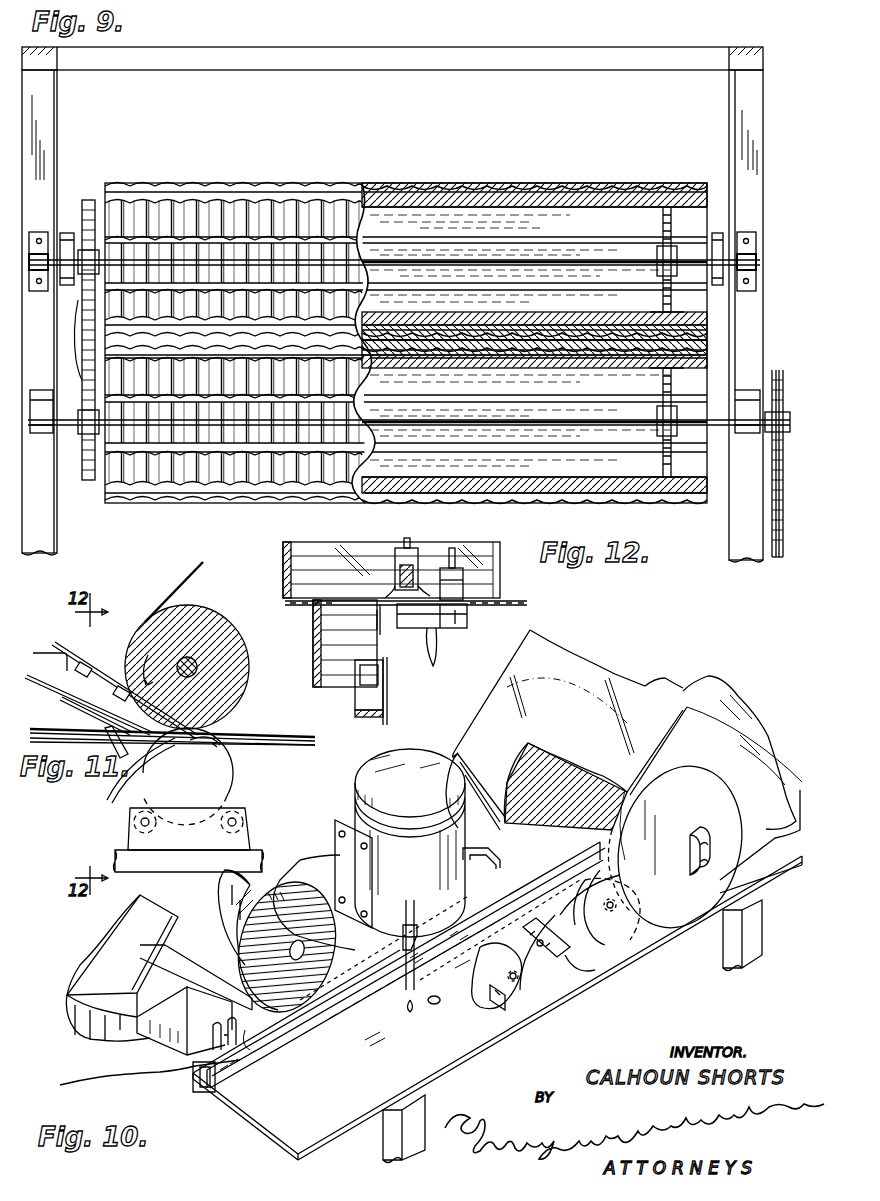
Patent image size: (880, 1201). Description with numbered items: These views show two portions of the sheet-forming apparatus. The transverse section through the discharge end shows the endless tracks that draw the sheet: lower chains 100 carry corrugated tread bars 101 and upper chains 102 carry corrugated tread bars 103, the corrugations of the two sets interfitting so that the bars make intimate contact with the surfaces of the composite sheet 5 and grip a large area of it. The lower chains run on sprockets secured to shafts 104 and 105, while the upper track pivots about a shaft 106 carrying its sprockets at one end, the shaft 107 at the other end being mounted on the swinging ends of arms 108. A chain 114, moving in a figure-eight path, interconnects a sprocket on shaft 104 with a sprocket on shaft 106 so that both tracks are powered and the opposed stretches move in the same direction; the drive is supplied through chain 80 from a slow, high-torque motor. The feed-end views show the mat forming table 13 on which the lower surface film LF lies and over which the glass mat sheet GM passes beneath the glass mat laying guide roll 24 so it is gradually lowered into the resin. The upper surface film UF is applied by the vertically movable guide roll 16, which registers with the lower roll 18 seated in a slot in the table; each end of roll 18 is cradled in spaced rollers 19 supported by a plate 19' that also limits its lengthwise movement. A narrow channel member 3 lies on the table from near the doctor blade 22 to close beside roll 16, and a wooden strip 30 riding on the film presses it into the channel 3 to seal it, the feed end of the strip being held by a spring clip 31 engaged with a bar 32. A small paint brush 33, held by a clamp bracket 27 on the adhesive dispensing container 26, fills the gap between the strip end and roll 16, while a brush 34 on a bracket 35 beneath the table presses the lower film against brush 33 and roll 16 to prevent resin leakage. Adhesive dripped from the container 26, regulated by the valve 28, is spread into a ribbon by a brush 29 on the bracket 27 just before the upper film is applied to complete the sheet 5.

In FIG. 12, the channel member 3 is at (396, 618).
In FIG. 11, the channel member 3 is at (90, 735).
In FIG. 10, the channel member 3 is at (208, 1092).
In FIG. 9, the fabric sheet 5 is at (474, 358).
In FIG. 11, the fabric sheet 5 is at (266, 735).
In FIG. 10, the fabric sheet 5 is at (737, 712).
In FIG. 12, the mat forming table 13 is at (510, 602).
In FIG. 11, the mat forming table 13 is at (72, 742).
In FIG. 10, the mat forming table 13 is at (447, 1068).
In FIG. 12, the guide roll 16 is at (495, 550).
In FIG. 11, the guide roll 16 is at (208, 612).
In FIG. 10, the guide roll 16 is at (720, 805).
In FIG. 12, the lower roll 18 is at (322, 624).
In FIG. 11, the lower roll 18 is at (230, 780).
In FIG. 10, the lower roll 18 is at (615, 960).
In FIG. 12, the rollers 19 is at (347, 688).
In FIG. 11, the rollers 19 is at (187, 841).
In FIG. 10, the rollers 19 is at (577, 969).
In FIG. 12, the plate 19' is at (406, 691).
In FIG. 11, the plate 19' is at (189, 824).
In FIG. 10, the doctor blade 22 is at (145, 1030).
In FIG. 10, the glass mat laying guide roll 24 is at (365, 1028).
In FIG. 10, the adhesive dispensing container 26 is at (368, 796).
In FIG. 11, the clamp bracket 27 is at (35, 651).
In FIG. 10, the clamp bracket 27 is at (490, 868).
In FIG. 10, the valve 28 is at (406, 930).
In FIG. 12, the brush 29 is at (456, 552).
In FIG. 11, the brush 29 is at (62, 702).
In FIG. 12, the strip 30 is at (400, 572).
In FIG. 11, the strip 30 is at (125, 730).
In FIG. 10, the strip 30 is at (347, 963).
In FIG. 10, the spring clip 31 is at (243, 1044).
In FIG. 10, the bar 32 is at (170, 946).
In FIG. 12, the paint brush 33 is at (407, 541).
In FIG. 11, the paint brush 33 is at (93, 698).
In FIG. 12, the brush 34 is at (458, 626).
In FIG. 11, the brush 34 is at (165, 745).
In FIG. 10, the brush 34 is at (585, 968).
In FIG. 12, the bracket 35 is at (434, 638).
In FIG. 11, the bracket 35 is at (110, 802).
In FIG. 10, the bracket 35 is at (563, 963).
In FIG. 9, the chain 80 is at (784, 547).
In FIG. 9, the lower chains 100 is at (666, 379).
In FIG. 9, the tread bars 101 is at (555, 348).
In FIG. 9, the upper chains 102 is at (663, 308).
In FIG. 9, the tread bars 103 is at (108, 236).
In FIG. 9, the shaft 104 is at (525, 419).
In FIG. 9, the shaft 105 is at (781, 382).
In FIG. 9, the shaft 106 is at (17, 258).
In FIG. 9, the shaft 107 is at (597, 258).
In FIG. 9, the arms 108 is at (727, 242).
In FIG. 9, the chain 114 is at (80, 335).
In FIG. 12, the upper surface film UF is at (308, 552).
In FIG. 11, the upper surface film UF is at (184, 585).
In FIG. 10, the upper surface film UF is at (555, 651).
In FIG. 12, the lower surface film LF is at (288, 593).
In FIG. 11, the lower surface film LF is at (313, 858).
In FIG. 10, the lower surface film LF is at (90, 1083).
In FIG. 10, the glass mat sheet GM is at (250, 894).